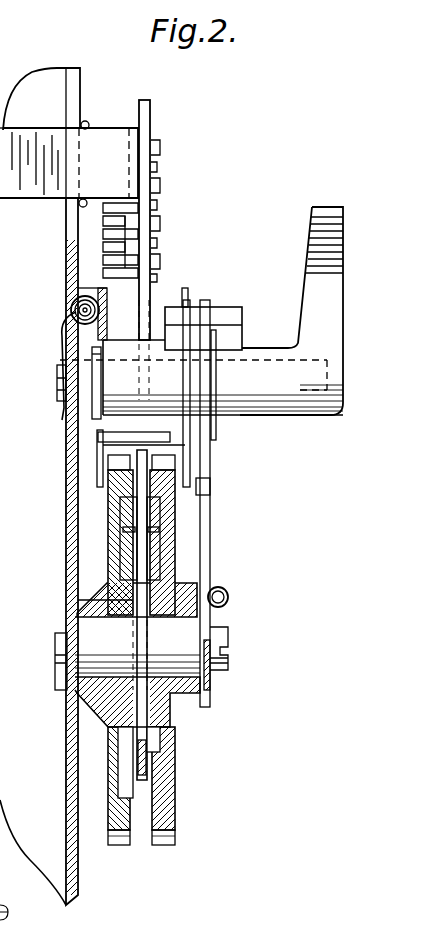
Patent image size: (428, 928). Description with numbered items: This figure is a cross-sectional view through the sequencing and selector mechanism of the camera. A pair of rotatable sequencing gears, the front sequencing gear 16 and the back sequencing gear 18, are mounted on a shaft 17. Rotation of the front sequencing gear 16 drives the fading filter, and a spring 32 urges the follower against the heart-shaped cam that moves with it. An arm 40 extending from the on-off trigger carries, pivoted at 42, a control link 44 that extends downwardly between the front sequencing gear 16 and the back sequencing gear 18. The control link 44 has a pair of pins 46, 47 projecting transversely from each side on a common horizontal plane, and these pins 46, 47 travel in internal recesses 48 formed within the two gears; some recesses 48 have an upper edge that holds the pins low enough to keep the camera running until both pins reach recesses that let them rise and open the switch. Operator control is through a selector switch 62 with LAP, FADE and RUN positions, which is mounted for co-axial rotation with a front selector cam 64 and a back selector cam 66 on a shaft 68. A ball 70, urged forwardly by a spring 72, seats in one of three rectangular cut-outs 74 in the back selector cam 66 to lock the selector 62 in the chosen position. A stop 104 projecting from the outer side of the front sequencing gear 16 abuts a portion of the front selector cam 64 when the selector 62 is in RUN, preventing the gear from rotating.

The front sequencing gear 16 is at (176, 515).
The shaft 17 is at (62, 648).
The back sequencing gear 18 is at (110, 520).
The spring 32 is at (228, 597).
The arm 40 is at (106, 145).
The pivot 42 is at (160, 150).
The control link 44 is at (139, 113).
The pin 46 is at (152, 531).
The pin 47 is at (123, 531).
The internal recesses 48 is at (120, 553).
The selector switch 62 is at (192, 330).
The front selector cam 64 is at (189, 466).
The back selector cam 66 is at (97, 462).
The shaft 68 is at (92, 350).
The ball 70 is at (72, 304).
The spring 72 is at (62, 322).
The rectangular cut-outs 74 is at (113, 306).
The stop 104 is at (207, 492).